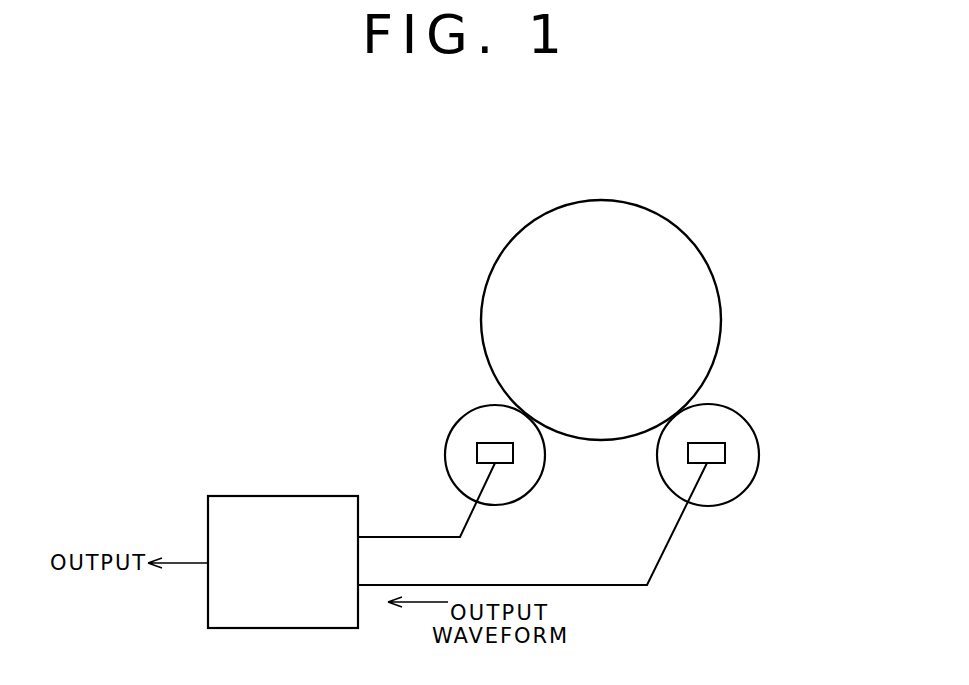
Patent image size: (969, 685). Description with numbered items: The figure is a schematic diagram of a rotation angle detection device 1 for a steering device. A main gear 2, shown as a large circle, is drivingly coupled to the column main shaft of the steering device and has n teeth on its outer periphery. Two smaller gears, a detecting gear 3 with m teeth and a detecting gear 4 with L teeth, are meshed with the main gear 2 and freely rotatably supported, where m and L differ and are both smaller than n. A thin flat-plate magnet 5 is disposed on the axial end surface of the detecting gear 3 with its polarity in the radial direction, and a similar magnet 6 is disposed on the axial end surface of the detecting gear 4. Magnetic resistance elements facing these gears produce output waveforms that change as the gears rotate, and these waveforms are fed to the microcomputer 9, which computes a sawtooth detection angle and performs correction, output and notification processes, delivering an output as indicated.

The rotation angle detection device 1 is at (717, 221).
The main gear 2 is at (714, 282).
The detecting gear 3 is at (452, 431).
The detecting gear 4 is at (752, 425).
The magnet 5 is at (513, 453).
The magnet 6 is at (725, 455).
The microcomputer 9 is at (229, 496).